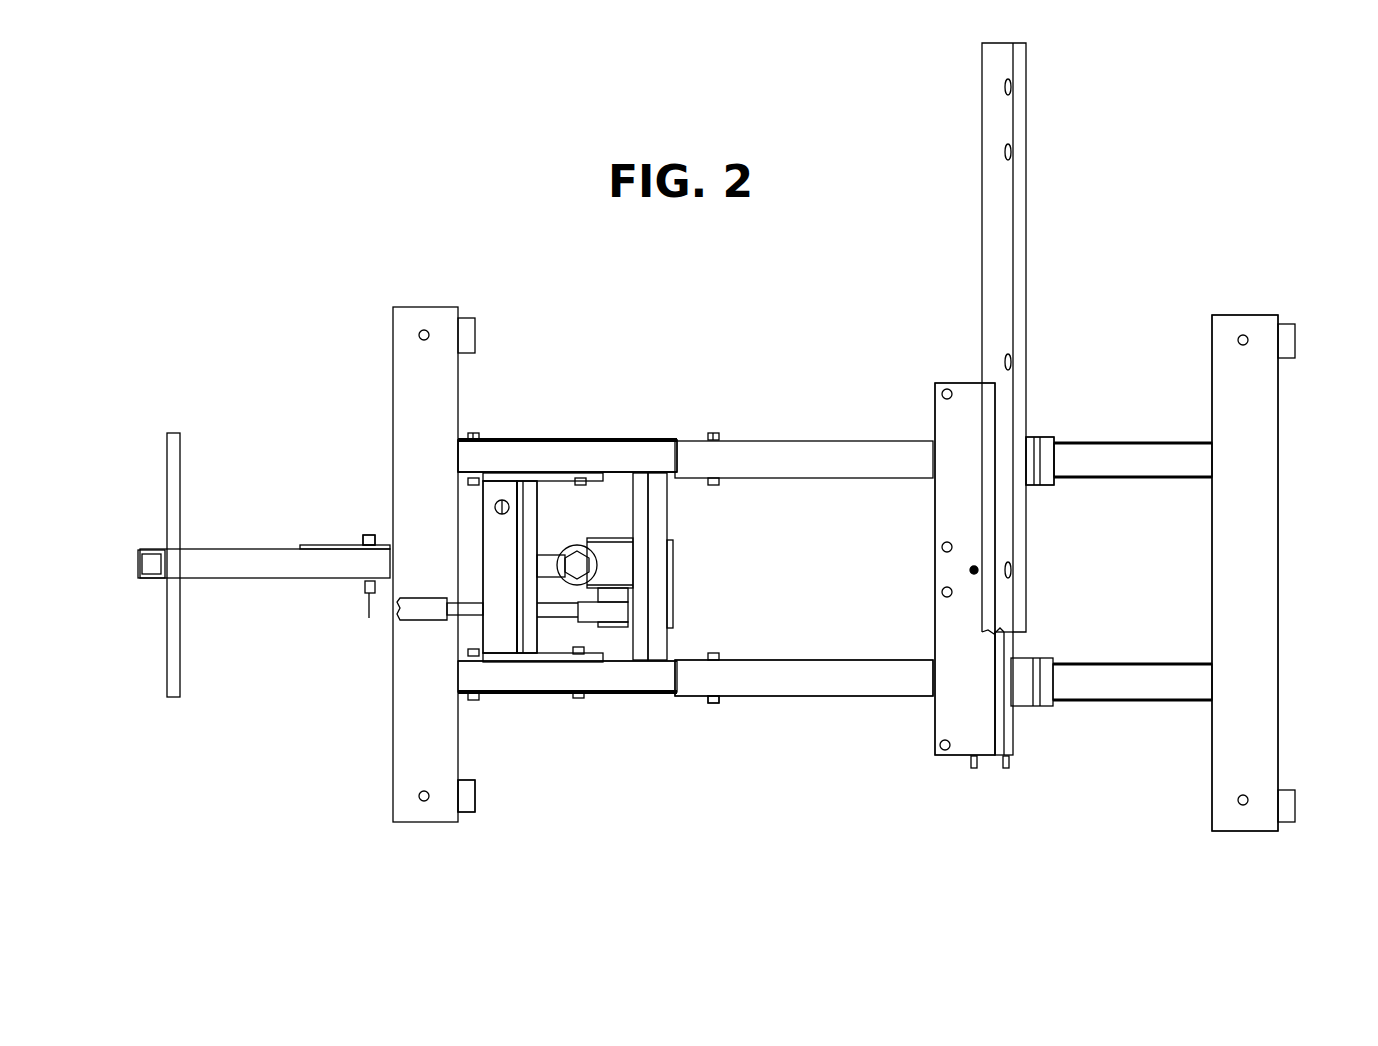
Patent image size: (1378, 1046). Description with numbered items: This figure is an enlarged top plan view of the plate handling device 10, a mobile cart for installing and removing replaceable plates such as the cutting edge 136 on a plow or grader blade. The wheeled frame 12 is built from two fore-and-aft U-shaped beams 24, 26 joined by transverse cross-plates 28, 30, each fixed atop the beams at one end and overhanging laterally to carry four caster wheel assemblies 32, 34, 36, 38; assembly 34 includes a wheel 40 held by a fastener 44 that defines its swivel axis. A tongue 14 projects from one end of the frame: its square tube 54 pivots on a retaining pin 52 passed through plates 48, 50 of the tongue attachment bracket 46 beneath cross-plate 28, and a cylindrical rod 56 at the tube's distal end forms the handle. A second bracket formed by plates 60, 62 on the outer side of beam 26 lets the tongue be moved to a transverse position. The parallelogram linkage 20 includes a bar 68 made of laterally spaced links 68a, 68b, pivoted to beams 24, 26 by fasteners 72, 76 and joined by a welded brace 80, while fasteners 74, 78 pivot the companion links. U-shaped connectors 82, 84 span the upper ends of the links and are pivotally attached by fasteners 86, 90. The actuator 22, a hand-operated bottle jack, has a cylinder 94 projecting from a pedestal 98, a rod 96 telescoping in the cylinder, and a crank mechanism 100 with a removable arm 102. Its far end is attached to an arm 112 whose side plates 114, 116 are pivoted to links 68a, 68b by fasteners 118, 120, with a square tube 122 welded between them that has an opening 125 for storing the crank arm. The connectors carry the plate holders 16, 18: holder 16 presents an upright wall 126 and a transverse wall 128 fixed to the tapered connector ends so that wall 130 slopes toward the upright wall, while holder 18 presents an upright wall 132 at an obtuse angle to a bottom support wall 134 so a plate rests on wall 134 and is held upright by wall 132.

The plate handling device 10 is at (1286, 405).
The wheeled frame 12 is at (808, 700).
The tongue 14 is at (222, 550).
The plate holder 16 is at (953, 382).
The plate holder 18 is at (1040, 436).
The parallelogram linkage 20 is at (550, 680).
The actuator 22 is at (582, 546).
The U-shaped beam 24 is at (1160, 456).
The U-shaped beam 26 is at (1150, 701).
The cross-plate 28 is at (400, 380).
The cross-plate 30 is at (1262, 550).
The caster wheel assembly 32 is at (470, 318).
The caster wheel assembly 34 is at (468, 813).
The caster wheel assembly 36 is at (1290, 326).
The caster wheel assembly 38 is at (1290, 822).
The wheel 40 is at (477, 796).
The threaded fastener 44 is at (424, 806).
The tongue attachment bracket 46 is at (355, 546).
The rectangular plate 48 is at (378, 540).
The rectangular plate 50 is at (366, 590).
The retaining pin 52 is at (368, 536).
The square-shaped tube 54 is at (150, 580).
The cylindrical rod 56 is at (175, 684).
The plate 60 is at (974, 769).
The plate 62 is at (1006, 769).
The bar 68 is at (530, 440).
The link 68a is at (636, 440).
The link 68b is at (622, 695).
The fastener 72 is at (476, 433).
The fastener 74 is at (718, 433).
The fastener 76 is at (474, 701).
The fastener 78 is at (718, 703).
The brace 80 is at (670, 512).
The U-shaped connector 82 is at (880, 450).
The U-shaped connector 84 is at (878, 700).
The fastener 86 is at (712, 478).
The fastener 90 is at (706, 703).
The cylinder 94 is at (610, 563).
The rod 96 is at (553, 555).
The pedestal 98 is at (674, 562).
The crank mechanism 100 is at (622, 624).
The removable arm 102 is at (432, 618).
The arm 112 is at (490, 548).
The side plate 114 is at (530, 473).
The side plate 116 is at (527, 662).
The fastener 118 is at (586, 440).
The fastener 120 is at (580, 698).
The square-shaped metal tube 122 is at (495, 590).
The opening 125 is at (495, 509).
The upright wall 126 is at (1000, 646).
The transverse wall 128 is at (950, 636).
The wall 130 is at (968, 567).
The upright wall 132 is at (1036, 486).
The bottom support wall 134 is at (1018, 708).
The cutting edge 136 is at (997, 218).